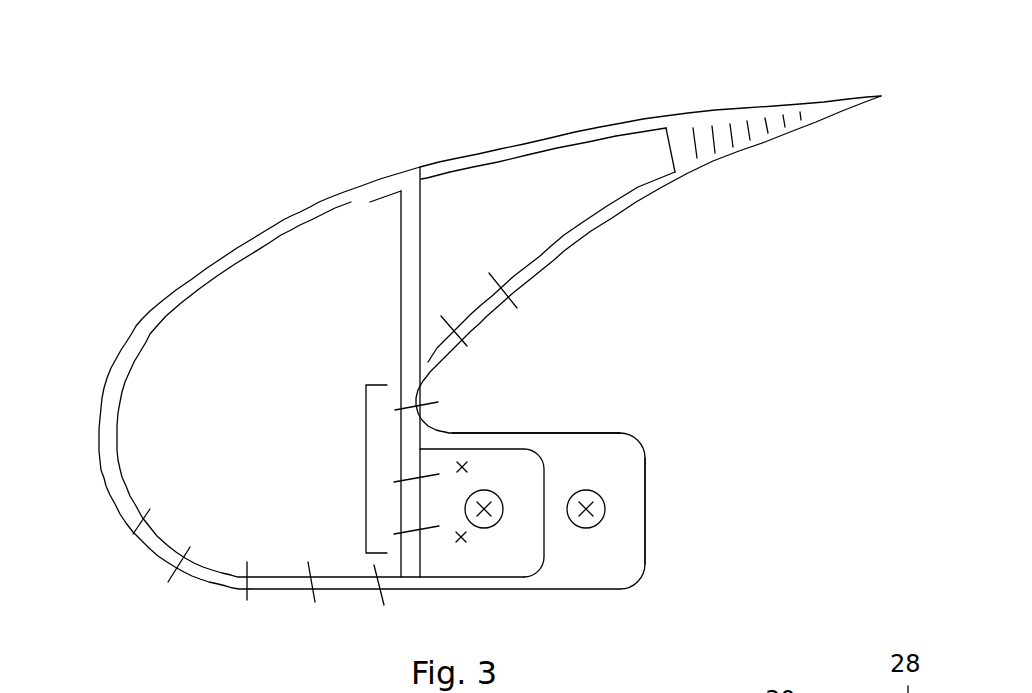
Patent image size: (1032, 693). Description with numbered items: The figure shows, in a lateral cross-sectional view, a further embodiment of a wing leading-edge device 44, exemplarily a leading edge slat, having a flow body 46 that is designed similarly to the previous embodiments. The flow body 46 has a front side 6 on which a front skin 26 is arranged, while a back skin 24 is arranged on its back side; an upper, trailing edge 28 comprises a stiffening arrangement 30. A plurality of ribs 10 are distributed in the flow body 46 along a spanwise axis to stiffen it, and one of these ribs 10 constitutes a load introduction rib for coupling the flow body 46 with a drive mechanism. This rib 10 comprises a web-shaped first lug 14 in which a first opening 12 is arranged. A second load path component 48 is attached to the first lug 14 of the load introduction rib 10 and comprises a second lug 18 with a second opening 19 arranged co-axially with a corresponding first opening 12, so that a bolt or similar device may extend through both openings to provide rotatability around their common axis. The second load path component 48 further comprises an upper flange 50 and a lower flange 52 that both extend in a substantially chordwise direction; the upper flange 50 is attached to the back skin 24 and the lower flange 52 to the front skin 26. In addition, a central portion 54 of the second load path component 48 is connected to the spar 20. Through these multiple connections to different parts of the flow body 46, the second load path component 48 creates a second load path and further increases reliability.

The front side 6 is at (74, 392).
The rib 10 is at (133, 534).
The first opening 12 is at (600, 510).
The first lug 14 is at (633, 472).
The second lug 18 is at (530, 550).
The second opening 19 is at (497, 520).
The spar 20 is at (401, 309).
The back skin 24 is at (623, 213).
The front skin 26 is at (130, 290).
The upper trailing edge 28 is at (861, 78).
The stiffening arrangement 30 is at (737, 116).
The wing leading-edge device 44 is at (183, 150).
The flow body 46 is at (337, 193).
The second load path component 48 is at (500, 470).
The upper flange 50 is at (471, 294).
The lower flange 52 is at (268, 575).
The central portion 54 is at (366, 480).